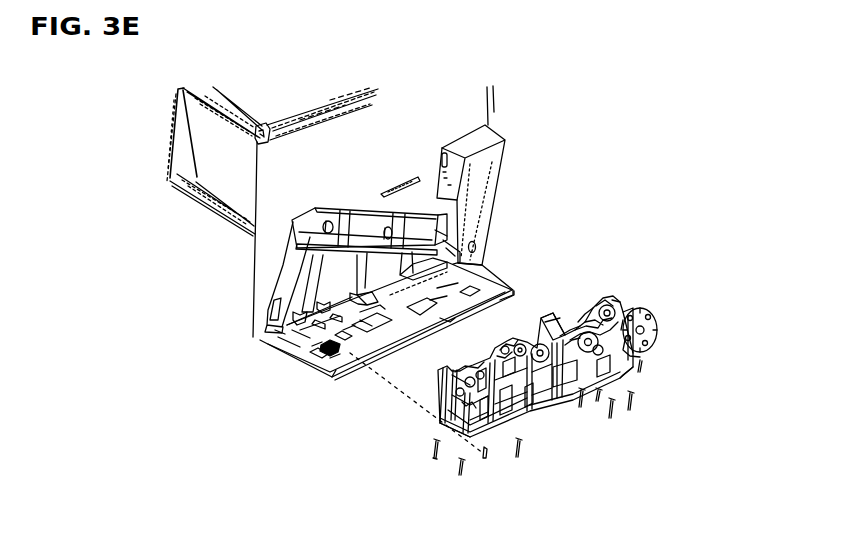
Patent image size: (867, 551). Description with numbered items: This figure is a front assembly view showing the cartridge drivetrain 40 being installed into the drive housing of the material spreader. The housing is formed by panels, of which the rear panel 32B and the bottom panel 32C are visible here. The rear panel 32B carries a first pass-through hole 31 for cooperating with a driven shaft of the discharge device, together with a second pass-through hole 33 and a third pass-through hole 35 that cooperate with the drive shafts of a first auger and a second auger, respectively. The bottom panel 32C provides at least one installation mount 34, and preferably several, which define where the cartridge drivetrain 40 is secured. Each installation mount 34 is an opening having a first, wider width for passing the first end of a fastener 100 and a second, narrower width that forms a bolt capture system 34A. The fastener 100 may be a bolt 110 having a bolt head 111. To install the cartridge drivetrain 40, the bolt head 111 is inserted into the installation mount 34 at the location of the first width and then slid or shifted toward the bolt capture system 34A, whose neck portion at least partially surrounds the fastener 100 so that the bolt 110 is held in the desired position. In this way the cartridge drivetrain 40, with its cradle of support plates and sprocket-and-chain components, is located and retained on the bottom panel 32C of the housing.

The first pass-through hole 31 is at (476, 244).
The rear panel 32B is at (296, 285).
The bottom panel 32C is at (345, 366).
The second pass-through hole 33 is at (426, 208).
The installation mount 34 is at (332, 352).
The bolt capture system 34A is at (330, 346).
The third pass-through hole 35 is at (328, 228).
The cartridge drivetrain 40 is at (563, 418).
The fastener 100 is at (630, 424).
The bolt 110 is at (488, 445).
The bolt head 111 is at (485, 459).